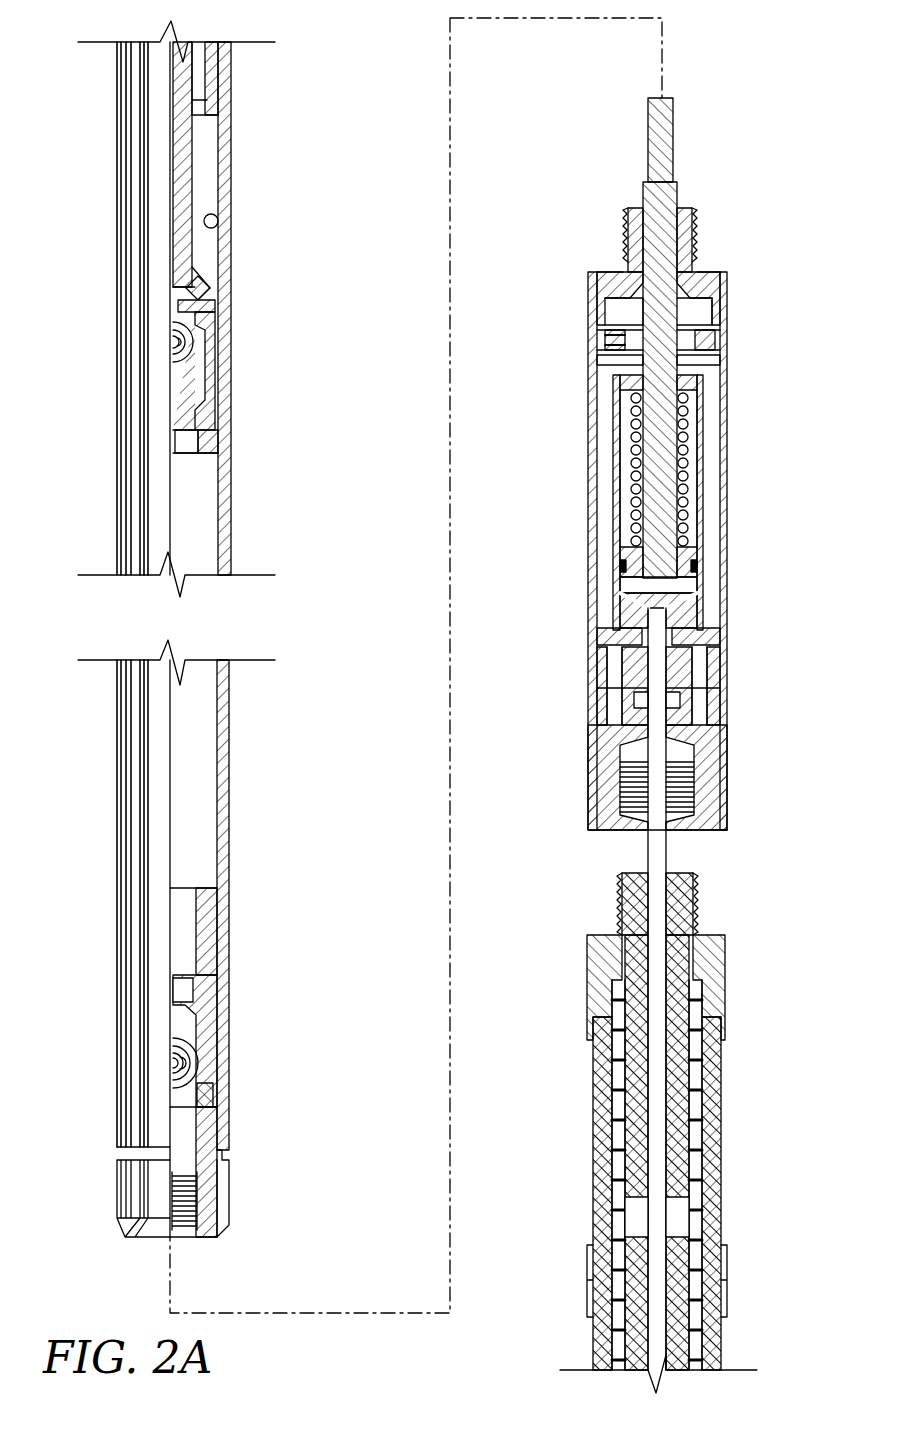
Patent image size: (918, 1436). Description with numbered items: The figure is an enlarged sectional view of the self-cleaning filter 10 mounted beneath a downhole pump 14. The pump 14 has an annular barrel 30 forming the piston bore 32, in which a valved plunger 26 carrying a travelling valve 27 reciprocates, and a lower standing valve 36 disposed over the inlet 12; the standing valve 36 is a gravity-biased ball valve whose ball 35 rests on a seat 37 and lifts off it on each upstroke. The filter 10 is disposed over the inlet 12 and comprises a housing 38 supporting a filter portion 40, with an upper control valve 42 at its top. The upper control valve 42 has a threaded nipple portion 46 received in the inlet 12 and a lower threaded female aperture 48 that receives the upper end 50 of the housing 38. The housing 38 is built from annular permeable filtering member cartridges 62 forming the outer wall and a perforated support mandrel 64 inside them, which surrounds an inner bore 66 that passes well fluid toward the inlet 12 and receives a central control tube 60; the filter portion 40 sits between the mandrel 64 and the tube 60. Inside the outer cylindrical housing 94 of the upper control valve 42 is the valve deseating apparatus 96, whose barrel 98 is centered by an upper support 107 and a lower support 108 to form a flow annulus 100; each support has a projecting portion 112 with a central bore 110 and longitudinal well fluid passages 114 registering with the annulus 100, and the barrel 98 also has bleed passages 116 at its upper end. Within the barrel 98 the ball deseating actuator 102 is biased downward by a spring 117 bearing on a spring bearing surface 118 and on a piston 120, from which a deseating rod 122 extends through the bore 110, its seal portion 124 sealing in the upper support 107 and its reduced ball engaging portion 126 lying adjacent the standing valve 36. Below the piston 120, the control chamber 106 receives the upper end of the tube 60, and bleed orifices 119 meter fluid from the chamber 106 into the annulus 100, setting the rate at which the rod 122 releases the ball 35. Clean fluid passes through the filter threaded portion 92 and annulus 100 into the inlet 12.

The filter 10 is at (742, 1118).
The inlet 12 is at (192, 1195).
The pump 14 is at (240, 487).
The valved plunger 26 is at (193, 157).
The travelling valve 27 is at (205, 340).
The annular barrel 30 is at (224, 792).
The piston bore 32 is at (217, 216).
The ball 35 is at (185, 1060).
The lower standing valve 36 is at (212, 1018).
The seat 37 is at (206, 1086).
The housing 38 is at (727, 970).
The filter portion 40 is at (722, 1262).
The upper control valve 42 is at (742, 685).
The nipple portion 46 is at (700, 220).
The lower threaded female aperture 48 is at (682, 797).
The upper end 50 is at (702, 950).
The control tube 60 is at (657, 1108).
The permeable filtering member cartridge 62 is at (720, 1185).
The support mandrel 64 is at (698, 1150).
The inner bore 66 is at (677, 1073).
The filter threaded portion 92 is at (697, 890).
The outer cylindrical housing 94 is at (727, 463).
The valve deseating apparatus 96 is at (612, 470).
The barrel 98 is at (700, 523).
The flow annulus 100 is at (713, 490).
The ball deseating actuator 102 is at (650, 425).
The control chamber 106 is at (690, 585).
The upper support 107 is at (608, 342).
The lower support 108 is at (720, 660).
The central bore 110 is at (720, 360).
The projecting portion 112 is at (630, 360).
The longitudinal well fluid passages 114 is at (705, 342).
The bleed passages 116 is at (690, 408).
The spring 117 is at (683, 445).
The spring bearing surface 118 is at (700, 388).
The bleed orifices 119 is at (700, 606).
The piston 120 is at (690, 553).
The deseating rod 122 is at (665, 270).
The seal portion 124 is at (660, 310).
The ball engaging portion 126 is at (665, 142).